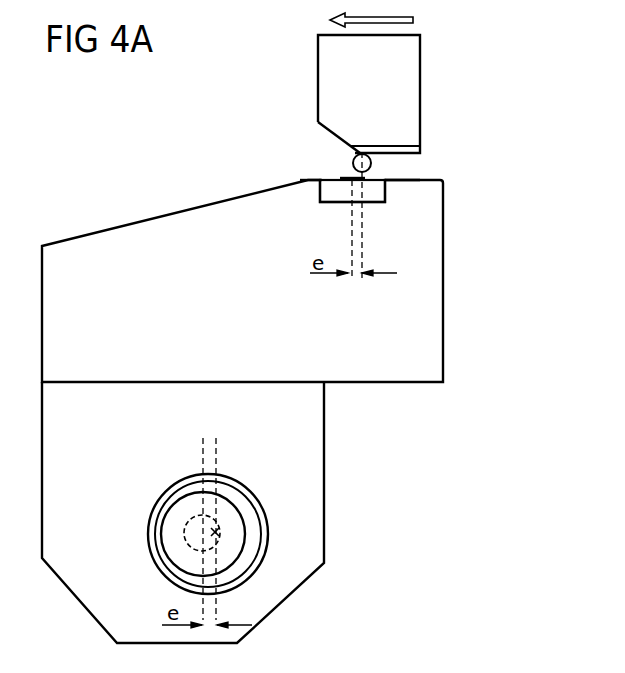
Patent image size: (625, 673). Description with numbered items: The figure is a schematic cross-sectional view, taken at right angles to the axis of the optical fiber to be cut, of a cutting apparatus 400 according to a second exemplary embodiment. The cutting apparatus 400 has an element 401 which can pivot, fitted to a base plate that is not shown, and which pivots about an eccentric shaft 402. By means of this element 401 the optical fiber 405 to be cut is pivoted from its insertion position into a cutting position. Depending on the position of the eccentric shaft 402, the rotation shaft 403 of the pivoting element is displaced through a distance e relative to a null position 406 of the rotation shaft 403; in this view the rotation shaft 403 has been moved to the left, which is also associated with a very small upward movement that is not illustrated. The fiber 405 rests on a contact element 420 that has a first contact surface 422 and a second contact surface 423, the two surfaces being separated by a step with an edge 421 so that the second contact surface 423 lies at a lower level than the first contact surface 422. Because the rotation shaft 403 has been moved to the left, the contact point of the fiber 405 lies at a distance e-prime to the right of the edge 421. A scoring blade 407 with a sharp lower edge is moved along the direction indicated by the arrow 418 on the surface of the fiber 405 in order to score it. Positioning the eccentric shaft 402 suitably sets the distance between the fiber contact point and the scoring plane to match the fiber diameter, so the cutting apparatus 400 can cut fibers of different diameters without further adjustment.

The cutting apparatus 400 is at (505, 146).
The element which can pivot 401 is at (318, 430).
The eccentric shaft 402 is at (157, 508).
The rotation shaft 403 is at (235, 536).
The optical fiber 405 is at (366, 154).
The null position 406 is at (215, 532).
The scoring blade 407 is at (415, 67).
The arrow 418 is at (414, 20).
The contact element 420 is at (376, 203).
The edge 421 is at (352, 178).
The first contact surface 422 is at (342, 178).
The second contact surface 423 is at (400, 168).